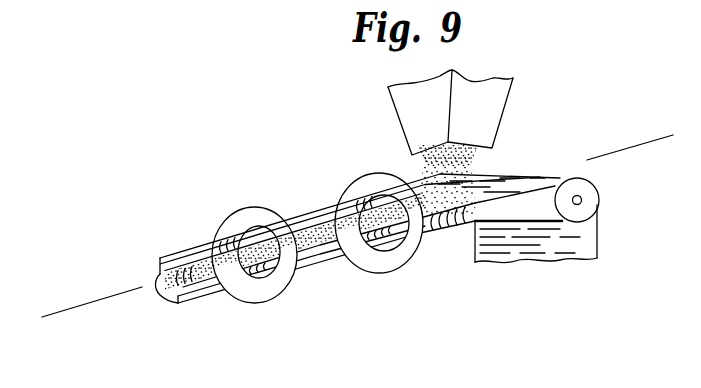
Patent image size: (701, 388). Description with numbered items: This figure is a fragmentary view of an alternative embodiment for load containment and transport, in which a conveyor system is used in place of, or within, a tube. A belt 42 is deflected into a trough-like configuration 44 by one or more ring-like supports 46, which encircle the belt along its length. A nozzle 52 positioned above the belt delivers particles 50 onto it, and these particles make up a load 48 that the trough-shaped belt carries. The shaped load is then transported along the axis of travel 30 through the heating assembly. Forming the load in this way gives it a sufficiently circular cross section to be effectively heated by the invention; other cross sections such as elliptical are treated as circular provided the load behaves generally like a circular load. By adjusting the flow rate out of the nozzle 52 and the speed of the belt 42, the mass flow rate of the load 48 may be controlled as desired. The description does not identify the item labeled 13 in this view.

The dispensing assembly 13 is at (576, 135).
The axis of travel 30 is at (92, 302).
The belt 42 is at (590, 227).
The trough-like configuration 44 is at (338, 279).
The ring-like supports 46 is at (294, 292).
The load 48 is at (165, 307).
The particles 50 is at (193, 258).
The nozzle 52 is at (494, 132).